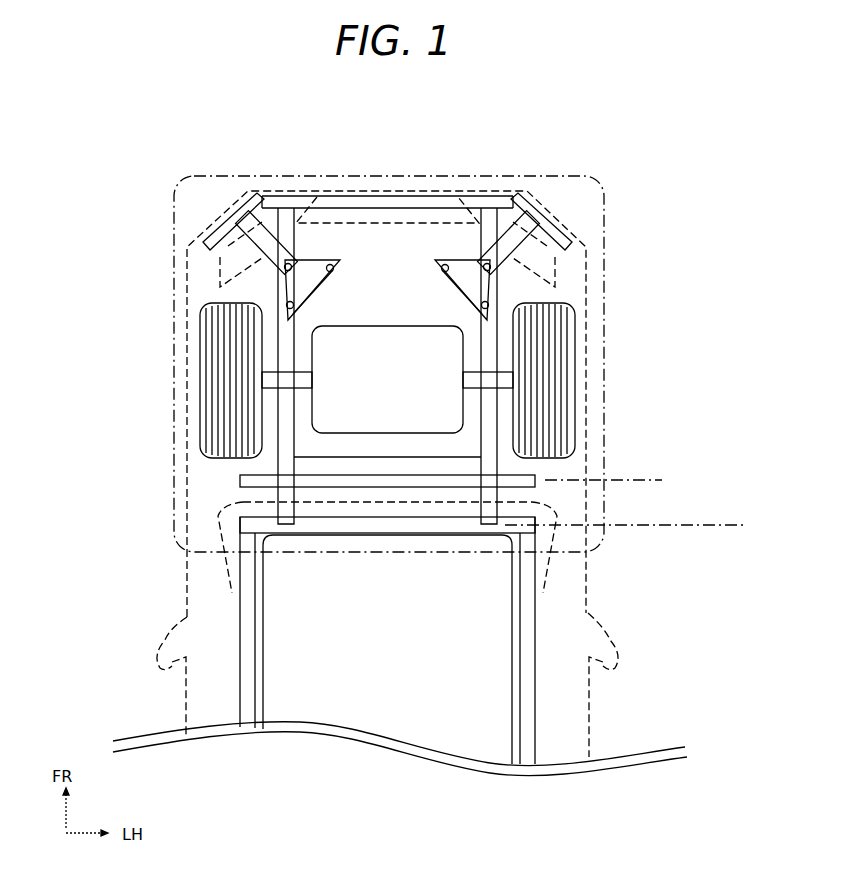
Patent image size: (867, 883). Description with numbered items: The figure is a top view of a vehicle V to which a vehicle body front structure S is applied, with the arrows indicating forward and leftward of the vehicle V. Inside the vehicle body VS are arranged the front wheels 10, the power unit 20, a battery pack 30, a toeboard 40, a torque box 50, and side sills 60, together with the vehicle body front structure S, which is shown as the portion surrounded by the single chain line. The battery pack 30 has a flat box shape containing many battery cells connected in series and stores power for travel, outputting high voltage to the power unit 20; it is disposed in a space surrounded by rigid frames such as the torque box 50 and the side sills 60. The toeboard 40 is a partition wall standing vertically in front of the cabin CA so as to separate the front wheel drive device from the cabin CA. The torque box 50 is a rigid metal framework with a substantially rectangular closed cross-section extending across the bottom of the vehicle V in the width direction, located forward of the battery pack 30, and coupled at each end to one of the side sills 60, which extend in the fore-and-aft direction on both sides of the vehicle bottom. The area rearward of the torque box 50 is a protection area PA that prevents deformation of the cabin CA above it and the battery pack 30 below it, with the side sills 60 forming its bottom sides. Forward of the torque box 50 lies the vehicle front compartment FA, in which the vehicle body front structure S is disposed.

The front wheels 10 is at (208, 364).
The power unit 20 is at (346, 421).
The battery pack 30 is at (290, 696).
The toeboard 40 is at (262, 478).
The torque box 50 is at (317, 523).
The side sills 60 is at (247, 605).
The vehicle body front structure S is at (452, 170).
The vehicle body VS is at (213, 212).
The vehicle V is at (722, 152).
The cabin CA is at (626, 502).
The vehicle front compartment FA is at (738, 524).
The protection area PA is at (750, 562).